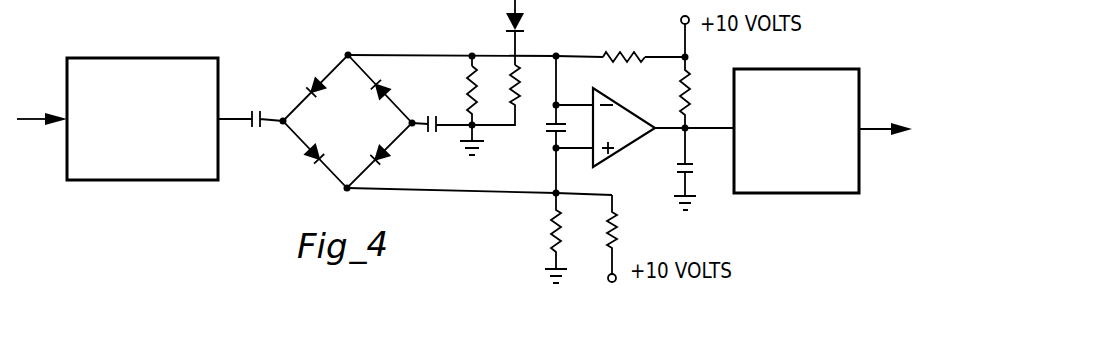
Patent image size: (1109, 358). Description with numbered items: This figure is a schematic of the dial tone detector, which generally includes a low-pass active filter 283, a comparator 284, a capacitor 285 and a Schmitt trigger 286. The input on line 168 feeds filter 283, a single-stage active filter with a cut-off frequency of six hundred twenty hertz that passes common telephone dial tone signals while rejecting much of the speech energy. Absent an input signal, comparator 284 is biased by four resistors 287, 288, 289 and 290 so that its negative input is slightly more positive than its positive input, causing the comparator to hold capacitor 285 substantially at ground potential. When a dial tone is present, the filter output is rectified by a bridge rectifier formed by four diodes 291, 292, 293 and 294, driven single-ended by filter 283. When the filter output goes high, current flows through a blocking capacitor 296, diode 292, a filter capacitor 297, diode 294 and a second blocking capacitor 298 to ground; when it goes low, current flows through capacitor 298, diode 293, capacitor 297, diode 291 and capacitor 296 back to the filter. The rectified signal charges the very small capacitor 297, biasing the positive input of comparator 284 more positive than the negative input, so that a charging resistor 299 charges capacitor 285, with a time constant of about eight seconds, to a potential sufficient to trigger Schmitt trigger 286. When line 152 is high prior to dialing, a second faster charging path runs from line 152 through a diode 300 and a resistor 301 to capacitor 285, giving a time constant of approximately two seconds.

The input signal line 168 is at (30, 119).
The low-pass active filter 283 is at (158, 58).
The blocking capacitor 296 is at (255, 109).
The diode 291 is at (314, 82).
The diode 292 is at (307, 158).
The diode 293 is at (380, 159).
The diode 294 is at (378, 91).
The second blocking capacitor 298 is at (442, 135).
The resistor 288 is at (470, 88).
The diode 300 is at (523, 31).
The resistor 301 is at (515, 95).
The filter capacitor 297 is at (552, 125).
The comparator 284 is at (645, 102).
The resistor 287 is at (634, 44).
The charging resistor 299 is at (702, 103).
The capacitor 285 is at (688, 170).
The Schmitt trigger 286 is at (796, 69).
The line 152 is at (876, 128).
The resistor 290 is at (550, 235).
The resistor 289 is at (617, 236).